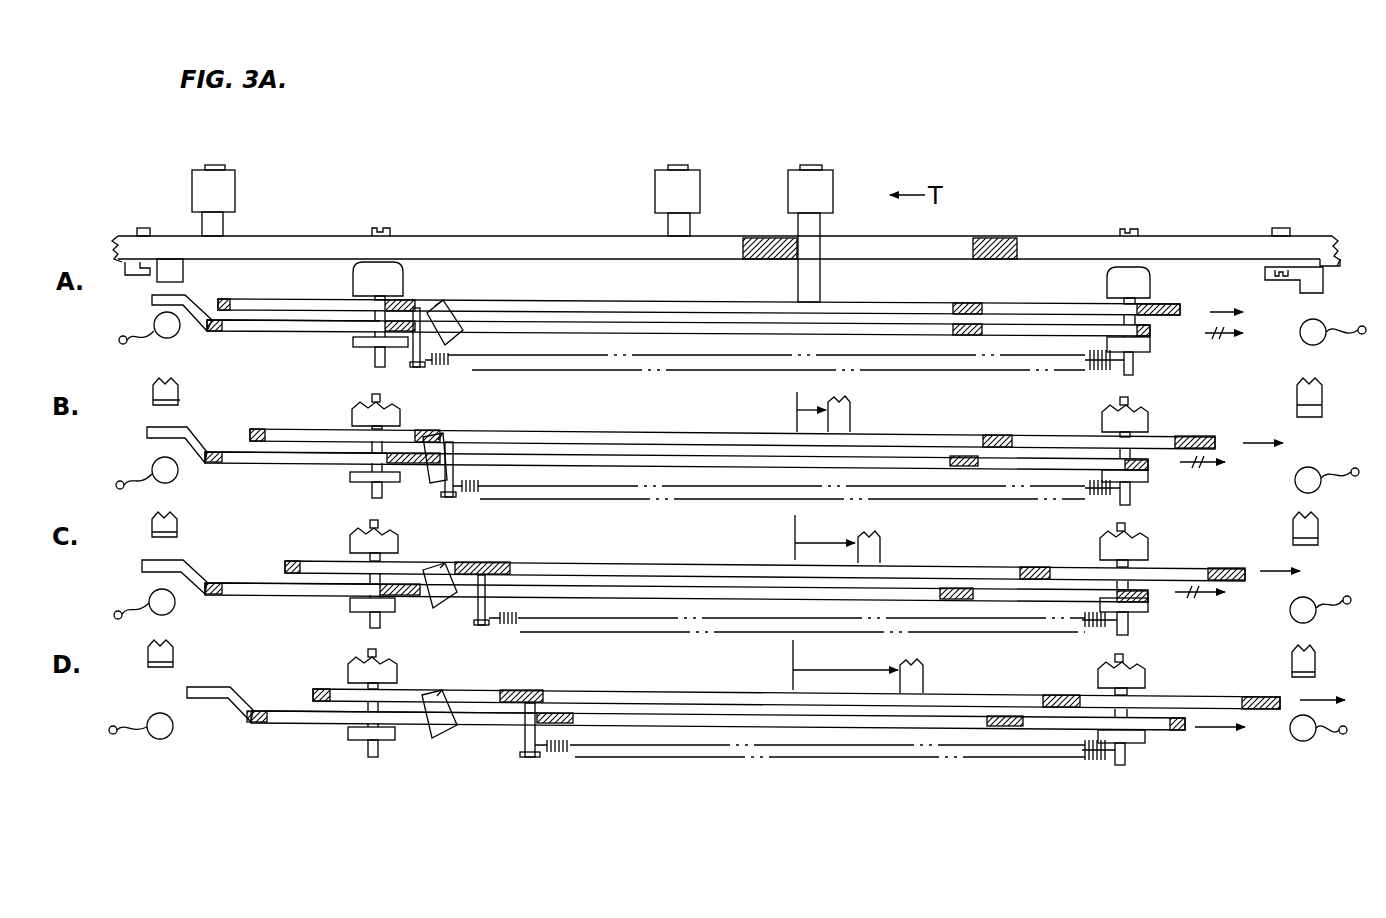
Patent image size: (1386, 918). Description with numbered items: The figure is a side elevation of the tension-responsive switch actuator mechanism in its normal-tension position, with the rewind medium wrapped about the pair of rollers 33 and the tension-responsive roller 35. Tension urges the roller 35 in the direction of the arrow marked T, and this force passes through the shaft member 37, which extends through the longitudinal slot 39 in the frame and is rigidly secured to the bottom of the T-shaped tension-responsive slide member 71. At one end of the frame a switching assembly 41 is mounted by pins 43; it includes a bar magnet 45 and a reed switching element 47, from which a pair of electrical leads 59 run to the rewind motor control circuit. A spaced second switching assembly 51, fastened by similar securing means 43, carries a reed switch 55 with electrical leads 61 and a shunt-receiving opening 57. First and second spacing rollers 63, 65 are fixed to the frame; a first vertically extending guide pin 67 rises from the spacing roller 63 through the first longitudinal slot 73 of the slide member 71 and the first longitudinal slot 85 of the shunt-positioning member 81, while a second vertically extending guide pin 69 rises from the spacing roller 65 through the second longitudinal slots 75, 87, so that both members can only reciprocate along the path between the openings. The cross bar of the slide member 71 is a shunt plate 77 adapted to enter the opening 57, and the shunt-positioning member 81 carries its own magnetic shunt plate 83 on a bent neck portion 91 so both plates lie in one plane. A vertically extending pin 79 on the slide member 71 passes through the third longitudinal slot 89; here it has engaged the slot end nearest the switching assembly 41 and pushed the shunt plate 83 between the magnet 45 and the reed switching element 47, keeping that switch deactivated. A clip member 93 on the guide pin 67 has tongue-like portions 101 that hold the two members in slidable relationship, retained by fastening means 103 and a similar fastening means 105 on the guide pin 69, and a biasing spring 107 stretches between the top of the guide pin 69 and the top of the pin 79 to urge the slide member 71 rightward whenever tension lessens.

The rollers 33 is at (235, 190).
The tension-responsive roller 35 is at (788, 190).
The shaft member 37 is at (820, 288).
The longitudinal slot 39 is at (948, 248).
The switching assembly 41 is at (125, 270).
The pins 43 is at (143, 228).
The bar magnet 45 is at (183, 278).
The reed switching element 47 is at (154, 322).
The second switching assembly 51 is at (1325, 272).
The reed switch 55 is at (1300, 333).
The shunt-receiving opening 57 is at (1300, 290).
The electrical leads 59 is at (127, 344).
The electrical leads 61 is at (1356, 752).
The first spacing roller 63 is at (403, 282).
The second spacing roller 65 is at (1148, 282).
The first vertically extending guide pin 67 is at (375, 360).
The second vertically extending guide pin 69 is at (1133, 365).
The tension-responsive slide member 71 is at (598, 302).
The first longitudinal slot 73 is at (330, 300).
The second longitudinal slot 75 is at (975, 303).
The shunt plate 77 is at (1180, 305).
The vertically extending pin 79 is at (418, 367).
The shunt-positioning member 81 is at (655, 330).
The magnetic shunt plate 83 is at (152, 300).
The first longitudinal slot 85 is at (275, 320).
The second longitudinal slot 87 is at (1035, 330).
The third longitudinal slot 89 is at (445, 310).
The neck portion 91 is at (210, 320).
The clip member 93 is at (413, 360).
The tongue-like portion 101 is at (447, 305).
The fastening means 103 is at (353, 342).
The fastening means 105 is at (1150, 352).
The biasing spring 107 is at (452, 362).